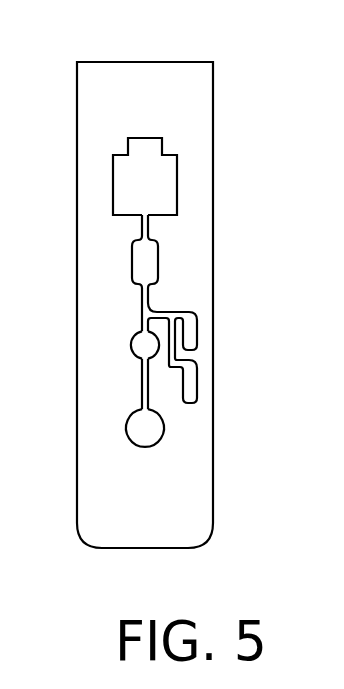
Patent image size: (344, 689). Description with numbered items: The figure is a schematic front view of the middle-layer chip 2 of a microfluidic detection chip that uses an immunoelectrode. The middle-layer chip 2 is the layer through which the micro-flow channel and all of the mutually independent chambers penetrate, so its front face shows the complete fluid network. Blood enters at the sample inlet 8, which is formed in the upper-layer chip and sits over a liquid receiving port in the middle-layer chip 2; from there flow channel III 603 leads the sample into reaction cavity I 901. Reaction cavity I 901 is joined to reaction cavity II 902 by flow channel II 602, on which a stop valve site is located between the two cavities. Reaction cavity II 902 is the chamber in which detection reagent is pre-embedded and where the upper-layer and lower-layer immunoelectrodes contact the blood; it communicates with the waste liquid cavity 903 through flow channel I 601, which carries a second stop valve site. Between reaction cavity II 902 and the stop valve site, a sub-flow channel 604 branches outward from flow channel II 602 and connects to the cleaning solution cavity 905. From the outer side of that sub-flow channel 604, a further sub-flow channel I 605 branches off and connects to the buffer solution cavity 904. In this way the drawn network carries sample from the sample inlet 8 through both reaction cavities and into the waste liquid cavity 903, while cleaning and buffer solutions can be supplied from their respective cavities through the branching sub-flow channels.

The middle-layer chip 2 is at (147, 87).
The sample inlet 8 is at (145, 432).
The flow channel I 601 is at (142, 232).
The flow channel II 602 is at (142, 317).
The flow channel III 603 is at (148, 395).
The sub-flow channel 604 is at (163, 312).
The sub-flow channel I 605 is at (176, 355).
The reaction cavity I 901 is at (144, 345).
The reaction cavity II 902 is at (147, 262).
The waste liquid cavity 903 is at (157, 178).
The buffer solution cavity 904 is at (196, 390).
The cleaning solution cavity 905 is at (188, 333).